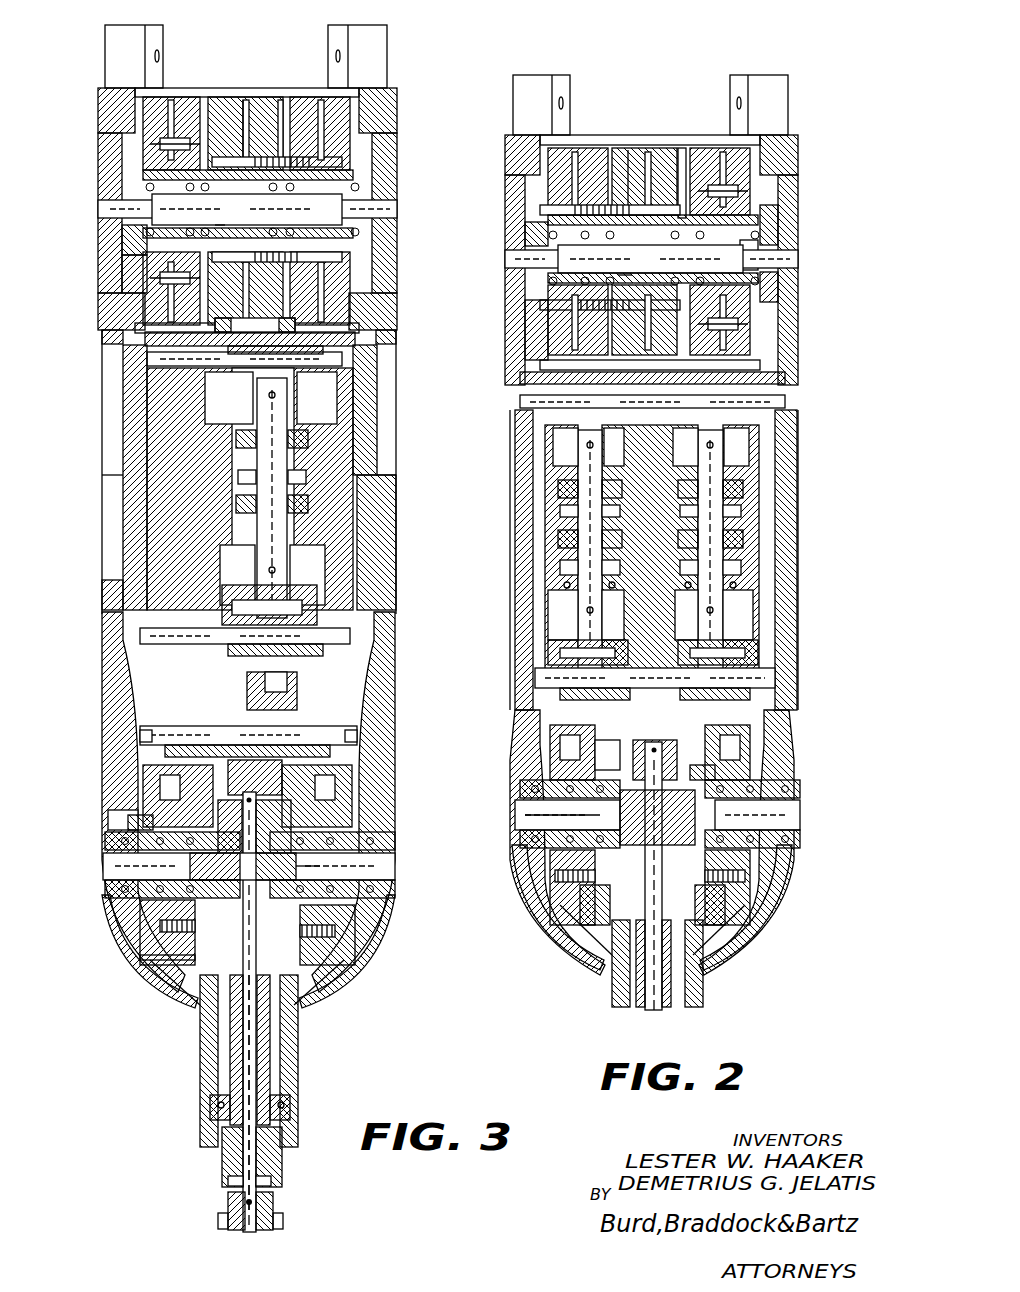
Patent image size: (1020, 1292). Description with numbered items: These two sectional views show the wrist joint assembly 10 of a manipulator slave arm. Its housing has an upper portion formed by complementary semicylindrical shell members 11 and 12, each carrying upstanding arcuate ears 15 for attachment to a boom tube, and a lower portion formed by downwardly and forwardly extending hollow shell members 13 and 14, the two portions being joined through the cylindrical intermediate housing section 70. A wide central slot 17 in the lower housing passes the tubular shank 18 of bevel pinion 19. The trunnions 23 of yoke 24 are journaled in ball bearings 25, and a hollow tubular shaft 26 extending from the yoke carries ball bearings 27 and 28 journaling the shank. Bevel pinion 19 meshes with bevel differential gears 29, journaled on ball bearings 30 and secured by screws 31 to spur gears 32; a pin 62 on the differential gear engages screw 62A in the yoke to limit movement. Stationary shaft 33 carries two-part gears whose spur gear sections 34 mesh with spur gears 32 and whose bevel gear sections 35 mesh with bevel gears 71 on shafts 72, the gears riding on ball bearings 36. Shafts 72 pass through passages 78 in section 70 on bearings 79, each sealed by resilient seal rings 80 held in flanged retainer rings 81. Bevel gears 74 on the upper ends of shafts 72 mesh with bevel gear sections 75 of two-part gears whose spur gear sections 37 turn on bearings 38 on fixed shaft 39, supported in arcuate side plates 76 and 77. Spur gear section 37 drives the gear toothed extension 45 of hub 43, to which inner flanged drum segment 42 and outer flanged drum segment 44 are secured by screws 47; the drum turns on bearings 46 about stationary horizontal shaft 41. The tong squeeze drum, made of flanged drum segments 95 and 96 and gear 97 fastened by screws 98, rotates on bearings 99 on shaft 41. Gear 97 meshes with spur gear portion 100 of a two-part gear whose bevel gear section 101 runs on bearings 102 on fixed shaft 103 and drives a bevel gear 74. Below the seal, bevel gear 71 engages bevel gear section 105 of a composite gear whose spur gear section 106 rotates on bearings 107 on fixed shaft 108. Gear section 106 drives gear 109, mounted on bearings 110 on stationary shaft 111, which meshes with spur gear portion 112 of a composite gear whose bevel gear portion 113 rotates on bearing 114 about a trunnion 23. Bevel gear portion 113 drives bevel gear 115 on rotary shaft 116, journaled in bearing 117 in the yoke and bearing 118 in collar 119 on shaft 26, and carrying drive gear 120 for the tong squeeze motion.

In FIG. 3, the wrist joint assembly 10 is at (395, 106).
In FIG. 2, the wrist joint assembly 10 is at (810, 142).
In FIG. 3, the semicylindrical shell member 11 is at (385, 142).
In FIG. 2, the semicylindrical shell member 11 is at (520, 178).
In FIG. 3, the semicylindrical shell member 12 is at (110, 160).
In FIG. 2, the semicylindrical shell member 12 is at (785, 185).
In FIG. 3, the hollow shell member 13 is at (350, 970).
In FIG. 2, the hollow shell member 13 is at (540, 930).
In FIG. 3, the hollow shell member 14 is at (150, 1000).
In FIG. 2, the hollow shell member 14 is at (770, 925).
In FIG. 3, the upstanding arcuate ear 15 is at (375, 45).
In FIG. 2, the upstanding arcuate ear 15 is at (780, 78).
In FIG. 3, the central slot 17 is at (198, 1020).
In FIG. 2, the central slot 17 is at (710, 978).
In FIG. 3, the tubular shank 18 is at (203, 1077).
In FIG. 2, the tubular shank 18 is at (615, 1000).
In FIG. 3, the bevel pinion 19 is at (300, 985).
In FIG. 2, the bevel pinion 19 is at (600, 910).
In FIG. 3, the trunnion 23 is at (110, 866).
In FIG. 2, the trunnion 23 is at (800, 805).
In FIG. 3, the yoke 24 is at (140, 962).
In FIG. 3, the ball bearing 25 is at (180, 884).
In FIG. 2, the ball bearing 25 is at (760, 843).
In FIG. 3, the hollow tubular shaft 26 is at (290, 1045).
In FIG. 2, the hollow tubular shaft 26 is at (690, 1000).
In FIG. 3, the ball bearing 27 is at (190, 985).
In FIG. 2, the ball bearing 27 is at (625, 915).
In FIG. 3, the ball bearing 28 is at (212, 1115).
In FIG. 3, the bevel differential gear 29 is at (120, 812).
In FIG. 3, the ball bearing 30 is at (150, 836).
In FIG. 2, the ball bearing 30 is at (760, 748).
In FIG. 3, the screw 31 is at (160, 930).
In FIG. 2, the screw 31 is at (755, 875).
In FIG. 3, the spur gear 32 is at (145, 782).
In FIG. 2, the spur gear 32 is at (770, 720).
In FIG. 2, the stationary shaft 33 is at (775, 678).
In FIG. 2, the spur gear section 34 is at (740, 648).
In FIG. 2, the bevel gear section 35 is at (684, 745).
In FIG. 2, the ball bearing 36 is at (555, 730).
In FIG. 2, the spur gear section 37 is at (770, 345).
In FIG. 2, the bearing 38 is at (770, 376).
In FIG. 2, the fixed shaft 39 is at (785, 402).
In FIG. 3, the stationary horizontal shaft 41 is at (110, 206).
In FIG. 2, the stationary horizontal shaft 41 is at (800, 258).
In FIG. 3, the inner flanged drum segment 42 is at (185, 105).
In FIG. 2, the inner flanged drum segment 42 is at (590, 150).
In FIG. 2, the hub 43 is at (755, 244).
In FIG. 3, the outer flanged drum segment 44 is at (170, 100).
In FIG. 2, the outer flanged drum segment 44 is at (573, 150).
In FIG. 3, the gear toothed extension 45 is at (125, 262).
In FIG. 2, the gear toothed extension 45 is at (770, 215).
In FIG. 3, the bearing 46 is at (115, 240).
In FIG. 2, the bearing 46 is at (540, 240).
In FIG. 2, the screw 47 is at (540, 312).
In FIG. 3, the pin 62 is at (130, 822).
In FIG. 2, the pin 62 is at (700, 765).
In FIG. 2, the screw 62A is at (730, 905).
In FIG. 3, the intermediate housing section 70 is at (352, 512).
In FIG. 2, the intermediate housing section 70 is at (555, 572).
In FIG. 3, the bevel gear 71 is at (228, 575).
In FIG. 2, the bevel gear 71 is at (740, 612).
In FIG. 3, the shaft 72 is at (245, 520).
In FIG. 2, the shaft 72 is at (740, 565).
In FIG. 3, the bevel gear 74 is at (340, 398).
In FIG. 2, the bevel gear 74 is at (740, 435).
In FIG. 2, the bevel gear section 75 is at (670, 430).
In FIG. 3, the arcuate side plate 76 is at (370, 438).
In FIG. 2, the arcuate side plate 76 is at (525, 510).
In FIG. 3, the arcuate side plate 77 is at (130, 432).
In FIG. 2, the arcuate side plate 77 is at (785, 482).
In FIG. 2, the passage 78 is at (560, 547).
In FIG. 2, the bearing 79 is at (560, 585).
In FIG. 3, the resilient seal ring 80 is at (240, 502).
In FIG. 2, the resilient seal ring 80 is at (730, 500).
In FIG. 2, the flanged retainer ring 81 is at (735, 525).
In FIG. 3, the flanged drum segment 95 is at (278, 150).
In FIG. 2, the flanged drum segment 95 is at (628, 150).
In FIG. 3, the flanged drum segment 96 is at (247, 100).
In FIG. 2, the flanged drum segment 96 is at (650, 150).
In FIG. 3, the gear 97 is at (215, 100).
In FIG. 2, the gear 97 is at (680, 150).
In FIG. 3, the screw 98 is at (262, 160).
In FIG. 2, the screw 98 is at (655, 305).
In FIG. 3, the bearing 99 is at (222, 225).
In FIG. 2, the bearing 99 is at (625, 275).
In FIG. 3, the spur gear portion 100 is at (150, 338).
In FIG. 3, the bevel gear section 101 is at (350, 333).
In FIG. 3, the bearing 102 is at (345, 366).
In FIG. 3, the fixed shaft 103 is at (150, 360).
In FIG. 3, the bevel gear section 105 is at (112, 665).
In FIG. 3, the spur gear section 106 is at (312, 652).
In FIG. 3, the bearing 107 is at (225, 618).
In FIG. 3, the fixed shaft 108 is at (340, 634).
In FIG. 3, the gear 109 is at (372, 690).
In FIG. 3, the bearing 110 is at (250, 705).
In FIG. 3, the stationary shaft 111 is at (305, 730).
In FIG. 3, the spur gear portion 112 is at (300, 800).
In FIG. 2, the spur gear portion 112 is at (560, 730).
In FIG. 3, the bevel gear portion 113 is at (325, 935).
In FIG. 2, the bevel gear portion 113 is at (600, 755).
In FIG. 3, the bearing 114 is at (300, 872).
In FIG. 2, the bearing 114 is at (540, 820).
In FIG. 3, the bevel gear 115 is at (240, 815).
In FIG. 2, the bevel gear 115 is at (640, 770).
In FIG. 3, the rotary shaft 116 is at (258, 1080).
In FIG. 2, the rotary shaft 116 is at (655, 1000).
In FIG. 3, the bearing 117 is at (225, 832).
In FIG. 3, the bearing 118 is at (228, 1182).
In FIG. 3, the collar 119 is at (224, 1160).
In FIG. 3, the drive gear 120 is at (218, 1220).